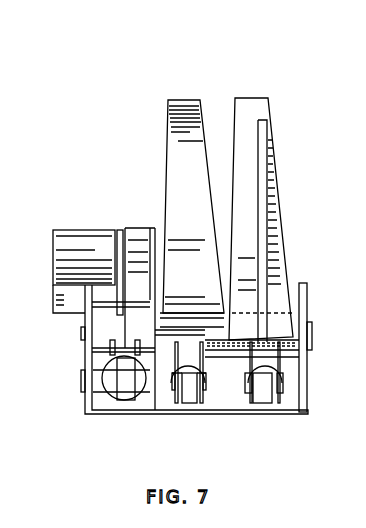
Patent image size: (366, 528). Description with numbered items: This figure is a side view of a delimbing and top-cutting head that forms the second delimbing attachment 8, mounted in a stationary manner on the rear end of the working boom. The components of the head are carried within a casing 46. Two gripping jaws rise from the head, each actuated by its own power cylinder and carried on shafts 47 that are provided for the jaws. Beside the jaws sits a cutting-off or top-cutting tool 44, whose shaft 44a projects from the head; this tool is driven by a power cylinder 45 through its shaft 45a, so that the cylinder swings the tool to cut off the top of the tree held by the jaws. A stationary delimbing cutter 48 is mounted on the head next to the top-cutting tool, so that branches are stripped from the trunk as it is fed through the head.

The second delimbing attachment 8 is at (213, 93).
The cutting-off or top-cutting tool 44 is at (119, 232).
The shaft 44a is at (82, 334).
The power cylinder 45 is at (122, 387).
The shaft 45a is at (82, 384).
The casing 46 is at (308, 386).
The shafts 47 is at (312, 336).
The stationary delimbing cutter 48 is at (53, 262).